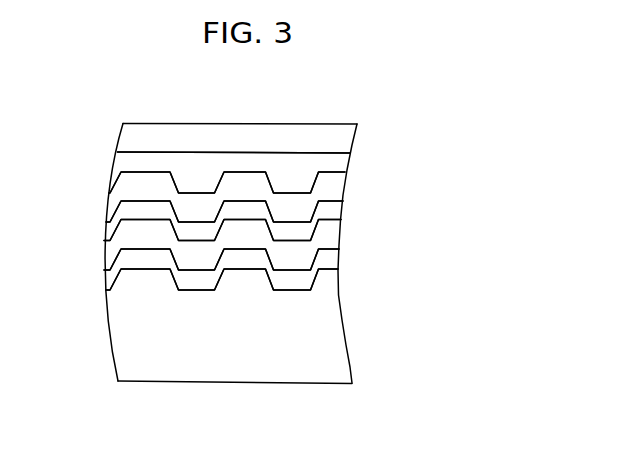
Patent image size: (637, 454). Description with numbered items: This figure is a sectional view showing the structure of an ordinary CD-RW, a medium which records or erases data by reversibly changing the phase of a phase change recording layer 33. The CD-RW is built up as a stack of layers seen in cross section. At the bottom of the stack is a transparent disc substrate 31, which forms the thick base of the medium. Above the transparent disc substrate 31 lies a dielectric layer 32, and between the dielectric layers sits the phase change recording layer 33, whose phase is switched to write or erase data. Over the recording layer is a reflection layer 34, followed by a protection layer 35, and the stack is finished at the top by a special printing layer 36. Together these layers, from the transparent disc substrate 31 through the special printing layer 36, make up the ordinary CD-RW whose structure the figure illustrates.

The transparent disc substrate 31 is at (338, 372).
The dielectric layer 32 is at (112, 277).
The phase change recording layer 33 is at (327, 238).
The reflection layer 34 is at (330, 187).
The protection layer 35 is at (332, 162).
The special printing layer 36 is at (338, 143).